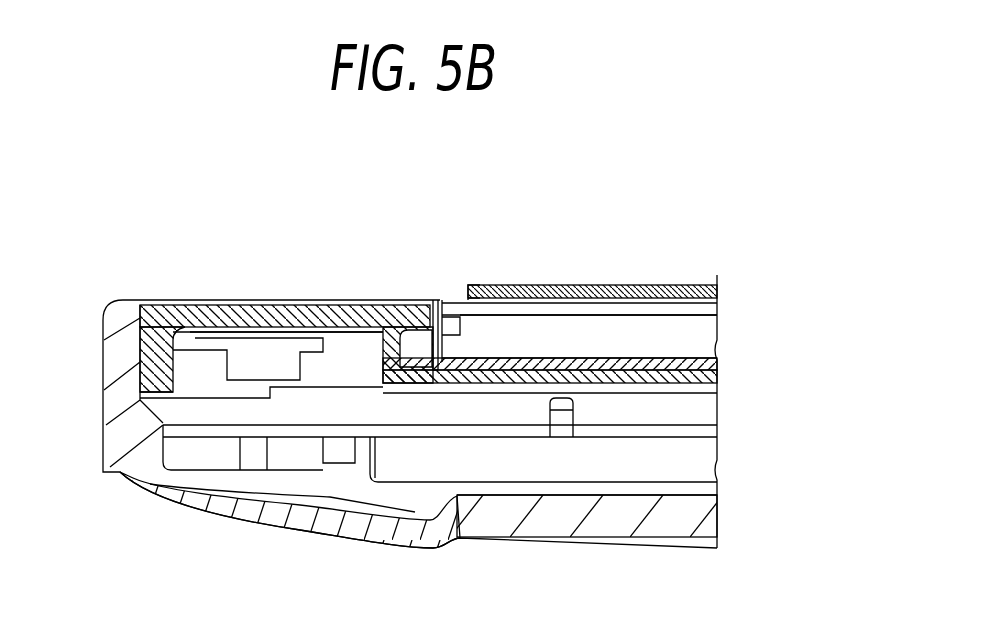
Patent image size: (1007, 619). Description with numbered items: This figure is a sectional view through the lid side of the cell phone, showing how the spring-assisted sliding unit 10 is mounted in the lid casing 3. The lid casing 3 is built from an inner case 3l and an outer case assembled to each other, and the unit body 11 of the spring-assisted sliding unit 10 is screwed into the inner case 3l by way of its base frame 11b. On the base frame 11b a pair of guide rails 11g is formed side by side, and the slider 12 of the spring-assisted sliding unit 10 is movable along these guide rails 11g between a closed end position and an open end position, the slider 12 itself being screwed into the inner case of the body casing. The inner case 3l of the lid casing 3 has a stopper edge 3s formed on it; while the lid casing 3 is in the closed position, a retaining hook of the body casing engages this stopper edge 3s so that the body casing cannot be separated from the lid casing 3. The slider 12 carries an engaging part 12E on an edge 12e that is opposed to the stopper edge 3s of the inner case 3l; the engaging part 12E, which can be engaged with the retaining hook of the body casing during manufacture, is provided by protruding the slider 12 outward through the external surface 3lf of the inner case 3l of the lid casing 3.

The lid casing 3 is at (150, 508).
The inner case 3l is at (207, 306).
The external surface 3lf is at (288, 306).
The stopper edge 3s is at (417, 303).
The spring-assisted sliding unit 10 is at (723, 258).
The unit body 11 is at (724, 333).
The base frame 11b is at (712, 366).
The guide rail 11g is at (643, 308).
The slider 12 is at (577, 281).
The edge 12e is at (463, 300).
The engaging part 12E is at (483, 288).